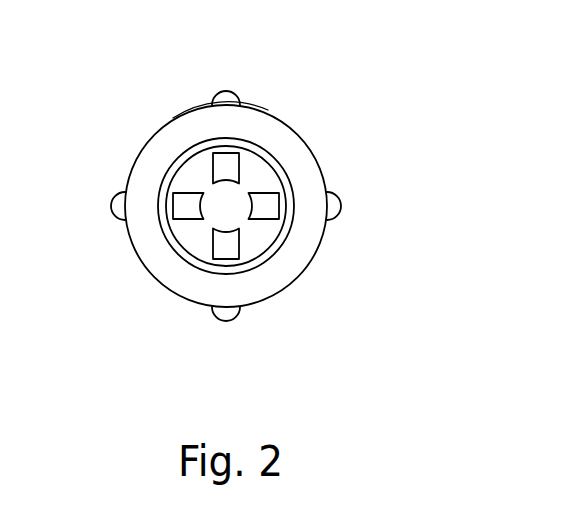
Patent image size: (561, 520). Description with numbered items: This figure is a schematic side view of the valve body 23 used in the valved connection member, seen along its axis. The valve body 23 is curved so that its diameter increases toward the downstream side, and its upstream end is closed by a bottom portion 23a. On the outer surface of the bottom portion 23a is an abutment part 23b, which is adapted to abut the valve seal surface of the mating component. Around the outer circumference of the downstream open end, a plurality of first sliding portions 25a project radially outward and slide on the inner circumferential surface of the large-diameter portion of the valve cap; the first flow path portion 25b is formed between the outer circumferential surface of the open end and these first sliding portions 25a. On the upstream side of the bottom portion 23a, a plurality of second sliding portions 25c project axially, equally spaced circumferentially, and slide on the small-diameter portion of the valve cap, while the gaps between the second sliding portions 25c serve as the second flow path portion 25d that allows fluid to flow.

The valve body 23 is at (310, 127).
The bottom portion 23a is at (178, 243).
The abutment part 23b is at (290, 262).
The first sliding portions 25a is at (222, 93).
The first flow path portion 25b is at (268, 110).
The second sliding portions 25c is at (181, 197).
The second flow path portion 25d is at (257, 178).